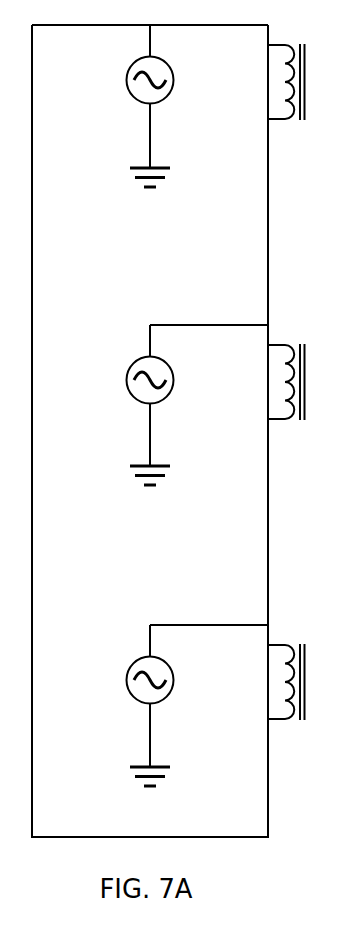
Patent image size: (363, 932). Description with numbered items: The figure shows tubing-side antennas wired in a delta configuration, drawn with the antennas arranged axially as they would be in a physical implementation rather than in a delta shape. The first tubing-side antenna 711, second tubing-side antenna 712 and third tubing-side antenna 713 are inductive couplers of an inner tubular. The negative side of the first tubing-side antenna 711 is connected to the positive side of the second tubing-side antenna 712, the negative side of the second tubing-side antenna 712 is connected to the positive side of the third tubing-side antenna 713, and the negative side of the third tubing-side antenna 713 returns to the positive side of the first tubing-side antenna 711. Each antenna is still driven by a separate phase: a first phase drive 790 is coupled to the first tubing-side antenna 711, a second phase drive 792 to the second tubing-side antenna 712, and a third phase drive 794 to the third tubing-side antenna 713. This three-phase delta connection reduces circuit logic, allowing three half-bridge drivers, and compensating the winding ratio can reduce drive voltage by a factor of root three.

The first phase drive 790 is at (128, 106).
The second phase drive 792 is at (128, 405).
The third phase drive 794 is at (128, 705).
The first tubing-side antenna 711 is at (271, 82).
The second tubing-side antenna 712 is at (271, 382).
The third tubing-side antenna 713 is at (271, 682).